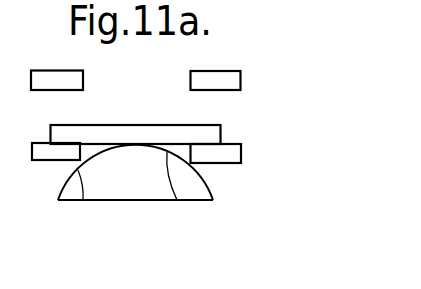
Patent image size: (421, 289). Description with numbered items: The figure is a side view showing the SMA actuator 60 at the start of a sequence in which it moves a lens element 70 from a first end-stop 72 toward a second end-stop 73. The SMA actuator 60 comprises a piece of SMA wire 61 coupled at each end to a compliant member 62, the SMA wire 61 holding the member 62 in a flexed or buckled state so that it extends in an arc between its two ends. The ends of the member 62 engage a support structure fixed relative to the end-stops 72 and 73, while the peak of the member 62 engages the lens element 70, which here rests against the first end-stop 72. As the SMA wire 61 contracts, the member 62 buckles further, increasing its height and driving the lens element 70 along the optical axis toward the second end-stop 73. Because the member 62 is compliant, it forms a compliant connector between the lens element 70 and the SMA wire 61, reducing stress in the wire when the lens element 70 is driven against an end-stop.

The SMA actuator 60 is at (83, 200).
The SMA wire 61 is at (132, 200).
The compliant member 62 is at (177, 200).
The lens element 70 is at (220, 133).
The first end-stop 72 is at (241, 153).
The second end-stop 73 is at (241, 82).